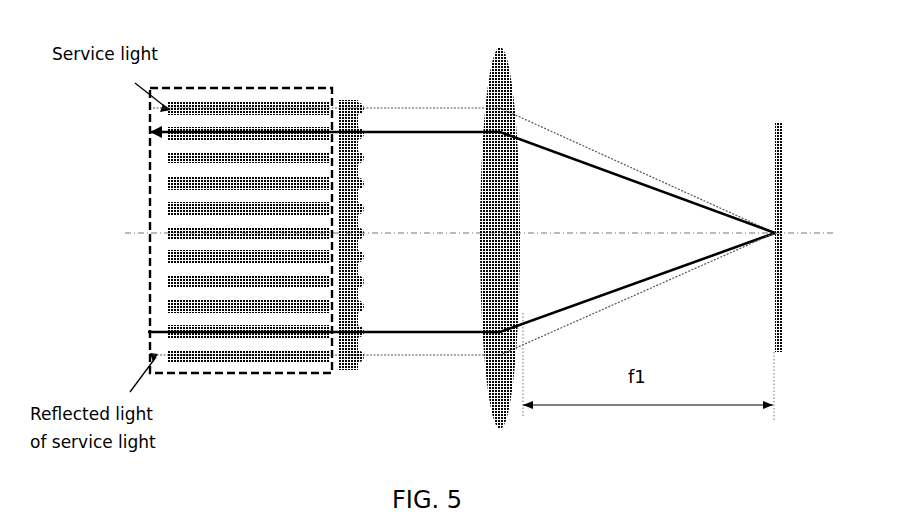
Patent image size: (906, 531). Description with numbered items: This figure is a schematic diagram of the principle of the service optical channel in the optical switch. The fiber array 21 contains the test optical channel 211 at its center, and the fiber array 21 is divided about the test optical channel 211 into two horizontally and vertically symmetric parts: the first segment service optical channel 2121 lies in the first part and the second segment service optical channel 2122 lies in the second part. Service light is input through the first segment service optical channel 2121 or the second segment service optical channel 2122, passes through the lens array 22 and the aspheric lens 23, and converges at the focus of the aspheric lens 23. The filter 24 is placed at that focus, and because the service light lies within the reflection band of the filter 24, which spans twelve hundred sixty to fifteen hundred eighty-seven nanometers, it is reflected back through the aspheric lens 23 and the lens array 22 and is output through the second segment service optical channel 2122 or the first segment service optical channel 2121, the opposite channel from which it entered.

The fiber array 21 is at (200, 88).
The lens array 22 is at (348, 102).
The aspheric lens 23 is at (505, 74).
The filter 24 is at (782, 140).
The test optical channel 211 is at (166, 238).
The first segment service optical channel 2121 is at (166, 163).
The second segment service optical channel 2122 is at (166, 312).